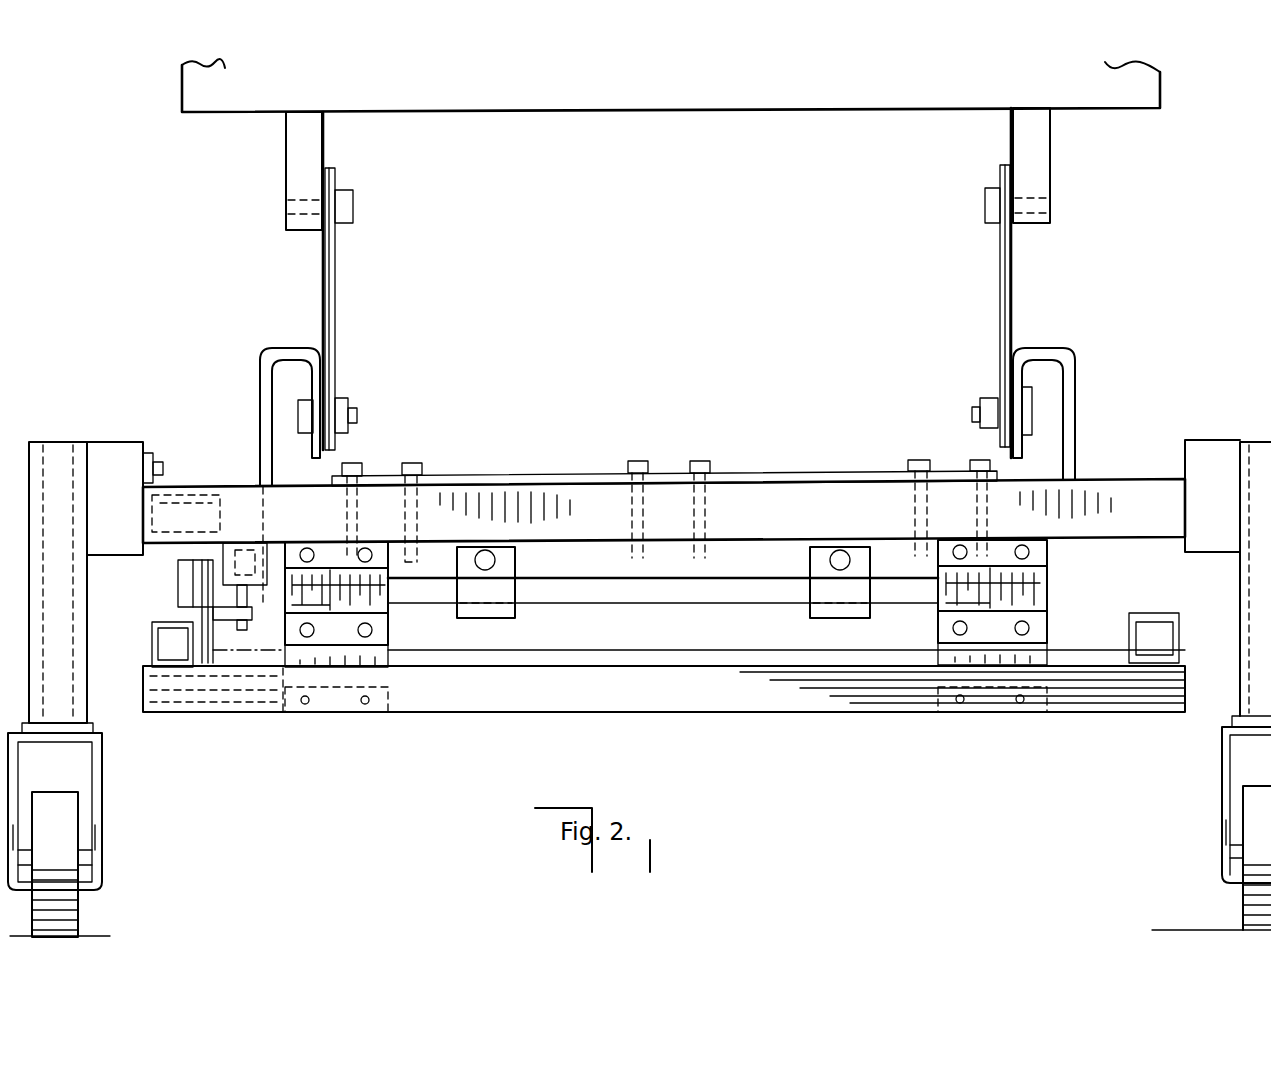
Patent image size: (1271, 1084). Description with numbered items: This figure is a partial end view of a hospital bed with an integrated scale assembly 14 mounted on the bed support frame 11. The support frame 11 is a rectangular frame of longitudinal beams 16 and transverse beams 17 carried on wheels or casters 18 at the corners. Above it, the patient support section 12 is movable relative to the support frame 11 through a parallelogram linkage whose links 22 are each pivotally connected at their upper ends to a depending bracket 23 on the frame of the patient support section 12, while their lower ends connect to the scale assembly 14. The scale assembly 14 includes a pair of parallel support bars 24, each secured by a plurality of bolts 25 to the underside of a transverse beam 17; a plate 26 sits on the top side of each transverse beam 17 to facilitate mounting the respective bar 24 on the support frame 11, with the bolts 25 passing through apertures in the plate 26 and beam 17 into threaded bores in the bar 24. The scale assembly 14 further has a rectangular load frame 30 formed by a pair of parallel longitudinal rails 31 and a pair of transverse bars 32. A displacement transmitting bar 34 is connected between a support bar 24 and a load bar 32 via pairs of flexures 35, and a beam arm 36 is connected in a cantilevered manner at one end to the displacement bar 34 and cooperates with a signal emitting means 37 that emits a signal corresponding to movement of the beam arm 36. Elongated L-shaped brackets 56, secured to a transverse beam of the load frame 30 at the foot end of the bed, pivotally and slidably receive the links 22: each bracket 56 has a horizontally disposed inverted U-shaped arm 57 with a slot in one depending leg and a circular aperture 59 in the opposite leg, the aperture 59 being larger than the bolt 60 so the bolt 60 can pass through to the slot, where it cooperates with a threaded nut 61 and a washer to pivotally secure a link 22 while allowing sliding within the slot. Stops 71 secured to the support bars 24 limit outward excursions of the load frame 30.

The bed support frame 11 is at (15, 466).
The patient support section 12 is at (198, 119).
The scale assembly 14 is at (607, 716).
The longitudinal beams 16 is at (117, 458).
The transverse beams 17 is at (802, 505).
The wheels or casters 18 is at (75, 912).
The links 22 is at (336, 298).
The depending bracket 23 is at (286, 167).
The parallel bars 24 is at (581, 568).
The bolts 25 is at (412, 463).
The plate 26 is at (531, 476).
The load frame 30 is at (825, 690).
The rails 31 is at (152, 636).
The transverse bars 32 is at (1096, 708).
The displacement transmitting bars 34 is at (678, 640).
The flexures 35 is at (352, 657).
The beam arm 36 is at (206, 612).
The signal emitting means 37 is at (258, 553).
The L-shaped brackets 56 is at (284, 344).
The inverted U-shaped arm 57 is at (265, 372).
The circular aperture 59 is at (1075, 413).
The bolt 60 is at (357, 416).
The threaded nut 61 is at (346, 400).
The stops 71 is at (505, 612).